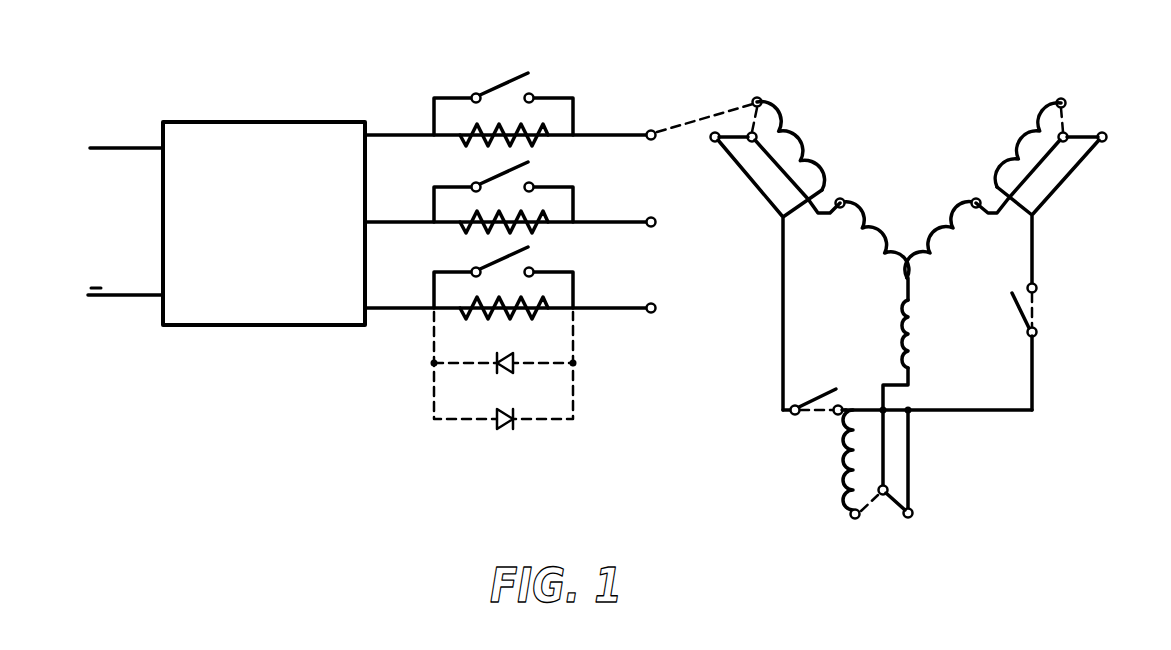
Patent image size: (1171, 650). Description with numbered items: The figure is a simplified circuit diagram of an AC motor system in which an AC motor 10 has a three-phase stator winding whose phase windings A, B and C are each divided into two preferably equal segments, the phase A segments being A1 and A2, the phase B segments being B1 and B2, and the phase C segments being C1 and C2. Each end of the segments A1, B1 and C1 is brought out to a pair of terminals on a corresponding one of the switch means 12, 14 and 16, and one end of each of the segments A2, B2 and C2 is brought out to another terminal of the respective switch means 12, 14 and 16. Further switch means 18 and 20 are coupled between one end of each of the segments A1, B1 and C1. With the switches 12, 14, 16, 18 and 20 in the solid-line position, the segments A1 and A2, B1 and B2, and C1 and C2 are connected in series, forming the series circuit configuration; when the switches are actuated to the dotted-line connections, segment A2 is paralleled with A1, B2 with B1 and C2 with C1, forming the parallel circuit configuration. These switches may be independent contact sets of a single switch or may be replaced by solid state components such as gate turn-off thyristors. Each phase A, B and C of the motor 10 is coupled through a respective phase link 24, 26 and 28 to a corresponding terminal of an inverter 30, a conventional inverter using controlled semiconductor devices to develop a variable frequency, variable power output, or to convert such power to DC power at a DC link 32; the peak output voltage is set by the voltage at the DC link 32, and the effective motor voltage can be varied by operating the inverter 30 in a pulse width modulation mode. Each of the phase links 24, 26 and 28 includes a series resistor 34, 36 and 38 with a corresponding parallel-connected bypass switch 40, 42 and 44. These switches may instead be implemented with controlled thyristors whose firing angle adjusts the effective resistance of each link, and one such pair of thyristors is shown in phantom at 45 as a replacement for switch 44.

The AC motor 10 is at (906, 59).
The switch means 12 is at (712, 128).
The switch means 14 is at (1076, 127).
The switch means 16 is at (877, 506).
The switch means 18 is at (818, 389).
The switch means 20 is at (1037, 300).
The phase link 24 is at (602, 130).
The phase link 26 is at (624, 224).
The phase link 28 is at (624, 311).
The inverter 30 is at (226, 122).
The DC link 32 is at (121, 146).
The resistor 34 is at (540, 140).
The resistor 36 is at (540, 224).
The resistor 38 is at (520, 316).
The switch 40 is at (496, 84).
The switch 42 is at (488, 178).
The switch 44 is at (484, 261).
The pair of thyristors 45 is at (592, 391).
The phase A winding A is at (754, 88).
The phase A winding segment A1 is at (796, 128).
The phase A winding segment A2 is at (876, 230).
The phase B winding B is at (1060, 89).
The phase B winding segment B1 is at (1011, 142).
The phase B winding segment B2 is at (952, 207).
The phase C winding C is at (856, 537).
The phase C winding segment C1 is at (848, 458).
The phase C winding segment C2 is at (918, 330).